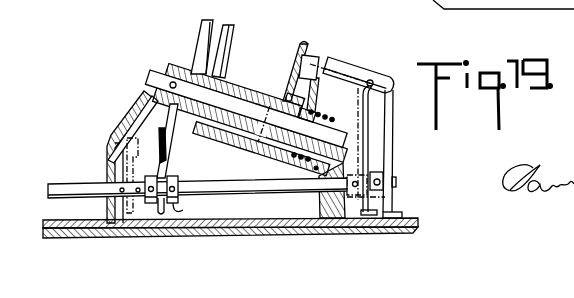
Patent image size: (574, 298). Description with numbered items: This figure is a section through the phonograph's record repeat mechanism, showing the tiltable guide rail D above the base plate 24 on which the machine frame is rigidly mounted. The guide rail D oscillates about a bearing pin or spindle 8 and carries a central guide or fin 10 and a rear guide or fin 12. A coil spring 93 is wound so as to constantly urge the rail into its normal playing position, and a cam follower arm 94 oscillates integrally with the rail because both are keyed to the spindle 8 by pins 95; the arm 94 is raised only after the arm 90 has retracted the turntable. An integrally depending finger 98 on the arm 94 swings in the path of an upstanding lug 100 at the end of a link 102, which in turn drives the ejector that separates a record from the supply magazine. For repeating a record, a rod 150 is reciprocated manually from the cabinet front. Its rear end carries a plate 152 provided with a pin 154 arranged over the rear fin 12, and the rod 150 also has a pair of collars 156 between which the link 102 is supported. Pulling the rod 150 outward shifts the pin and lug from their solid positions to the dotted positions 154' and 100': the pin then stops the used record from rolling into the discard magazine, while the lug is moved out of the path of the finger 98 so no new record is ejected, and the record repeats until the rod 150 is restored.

The bearing pin or spindle 8 is at (150, 73).
The central guide or fin 10 is at (296, 52).
The rear guide or fin 12 is at (318, 95).
The base plate 24 is at (416, 219).
The arm 90 is at (229, 43).
The coil spring 93 is at (293, 158).
The cam follower arm 94 is at (202, 33).
The pins 95 is at (153, 91).
The depending finger 98 is at (174, 137).
The upstanding lug 100 is at (125, 157).
The dotted line position of lug 100' is at (127, 129).
The link 102 is at (167, 161).
The rod 150 is at (72, 187).
The plate 152 is at (388, 138).
The pin 154 is at (358, 69).
The dotted line position of pin 154' is at (335, 55).
The collars 156 is at (150, 203).
The tiltable guide rail D is at (273, 144).